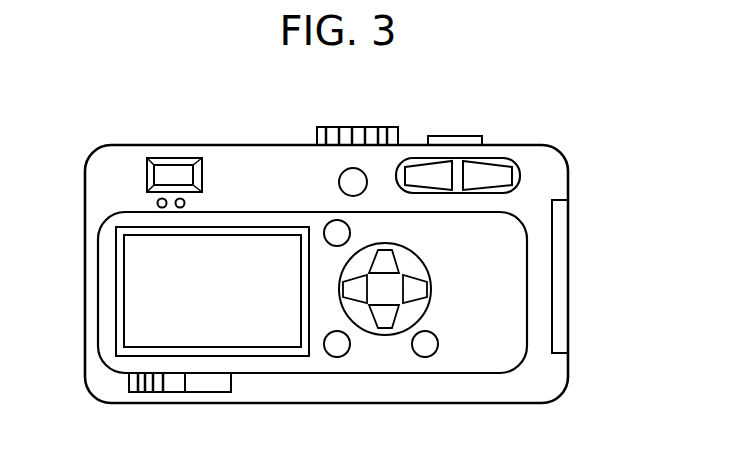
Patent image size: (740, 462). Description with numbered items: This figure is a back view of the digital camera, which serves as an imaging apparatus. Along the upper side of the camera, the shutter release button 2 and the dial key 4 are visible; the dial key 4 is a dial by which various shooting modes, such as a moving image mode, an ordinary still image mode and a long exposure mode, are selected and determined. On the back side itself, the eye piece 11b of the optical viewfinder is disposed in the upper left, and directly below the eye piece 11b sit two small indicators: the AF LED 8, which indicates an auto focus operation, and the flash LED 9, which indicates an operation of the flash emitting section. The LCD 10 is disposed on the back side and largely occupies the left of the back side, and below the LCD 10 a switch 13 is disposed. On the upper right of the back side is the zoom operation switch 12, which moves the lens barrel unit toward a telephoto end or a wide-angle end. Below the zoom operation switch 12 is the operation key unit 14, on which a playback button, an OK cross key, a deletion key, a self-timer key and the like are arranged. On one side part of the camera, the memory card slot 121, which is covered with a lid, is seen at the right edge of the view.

The shutter release button 2 is at (460, 136).
The dial key 4 is at (342, 127).
The AF LED 8 is at (156, 203).
The flash LED 9 is at (186, 203).
The LCD 10 is at (137, 306).
The eye piece 11b is at (173, 170).
The zoom operation switch 12 is at (507, 175).
The memory card slot 121 is at (563, 275).
The switch 13 is at (140, 383).
The operation key unit 14 is at (480, 357).